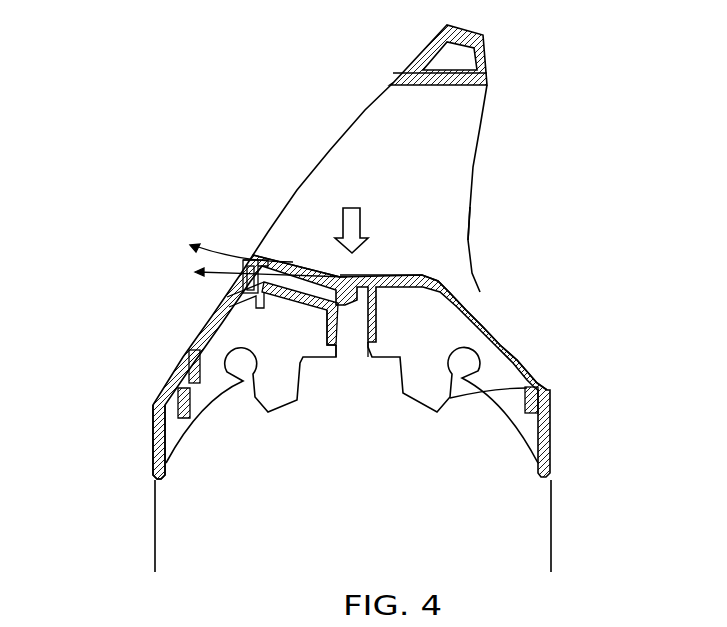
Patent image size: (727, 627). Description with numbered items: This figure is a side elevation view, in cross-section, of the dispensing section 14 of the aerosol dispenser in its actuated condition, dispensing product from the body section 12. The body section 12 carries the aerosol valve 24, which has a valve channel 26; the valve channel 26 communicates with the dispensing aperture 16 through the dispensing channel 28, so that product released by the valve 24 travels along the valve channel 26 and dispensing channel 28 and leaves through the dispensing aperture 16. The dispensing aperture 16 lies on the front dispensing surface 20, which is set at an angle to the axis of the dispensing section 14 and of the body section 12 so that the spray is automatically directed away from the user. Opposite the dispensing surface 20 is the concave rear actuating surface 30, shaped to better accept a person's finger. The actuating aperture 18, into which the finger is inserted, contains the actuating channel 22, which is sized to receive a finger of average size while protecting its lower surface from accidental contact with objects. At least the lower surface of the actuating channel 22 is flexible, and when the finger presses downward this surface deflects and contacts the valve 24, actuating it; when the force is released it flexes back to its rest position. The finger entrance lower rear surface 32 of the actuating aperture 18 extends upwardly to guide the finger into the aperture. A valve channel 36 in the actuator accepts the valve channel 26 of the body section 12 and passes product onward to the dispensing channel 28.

The body section 12 is at (540, 538).
The dispensing section 14 is at (553, 433).
The dispensing aperture 16 is at (247, 260).
The actuating aperture 18 is at (453, 165).
The dispensing surface 20 is at (222, 300).
The actuating channel 22 is at (460, 86).
The valve 24 is at (530, 388).
The valve channel 26 is at (347, 335).
The dispensing channel 28 is at (290, 267).
The rear actuating surface 30 is at (470, 207).
The finger entrance lower rear surface 32 is at (520, 357).
The valve channel 36 is at (326, 317).